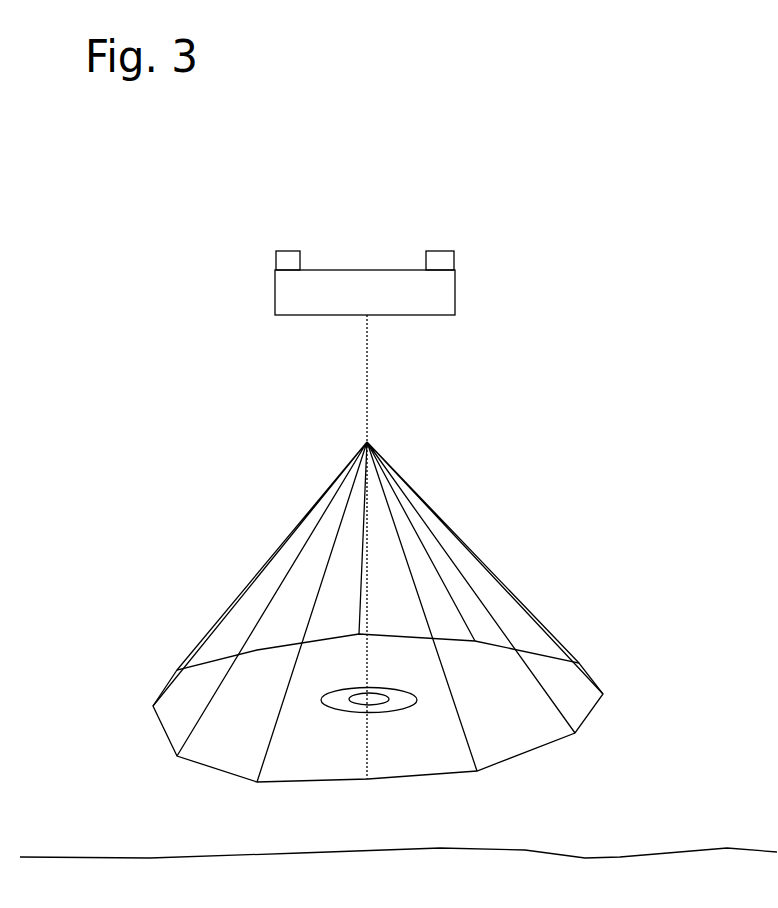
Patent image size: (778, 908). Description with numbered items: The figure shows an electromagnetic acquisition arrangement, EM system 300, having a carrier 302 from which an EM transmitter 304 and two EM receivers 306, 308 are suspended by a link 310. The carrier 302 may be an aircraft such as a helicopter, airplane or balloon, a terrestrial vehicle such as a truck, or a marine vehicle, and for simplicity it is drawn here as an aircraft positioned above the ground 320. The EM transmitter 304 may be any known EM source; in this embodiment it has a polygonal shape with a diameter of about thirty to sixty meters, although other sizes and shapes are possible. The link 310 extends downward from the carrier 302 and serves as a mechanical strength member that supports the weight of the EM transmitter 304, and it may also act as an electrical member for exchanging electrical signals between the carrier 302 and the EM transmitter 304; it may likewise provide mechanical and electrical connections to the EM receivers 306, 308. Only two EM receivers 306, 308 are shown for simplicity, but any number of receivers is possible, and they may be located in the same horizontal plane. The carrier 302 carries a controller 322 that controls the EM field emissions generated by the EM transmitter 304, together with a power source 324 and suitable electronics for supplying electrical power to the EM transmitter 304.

The EM system 300 is at (637, 296).
The carrier 302 is at (363, 271).
The EM transmitter 304 is at (612, 678).
The EM receiver 306 is at (335, 697).
The EM receiver 308 is at (399, 705).
The link 310 is at (367, 392).
The ground 320 is at (525, 850).
The controller 322 is at (438, 251).
The power source 324 is at (290, 251).